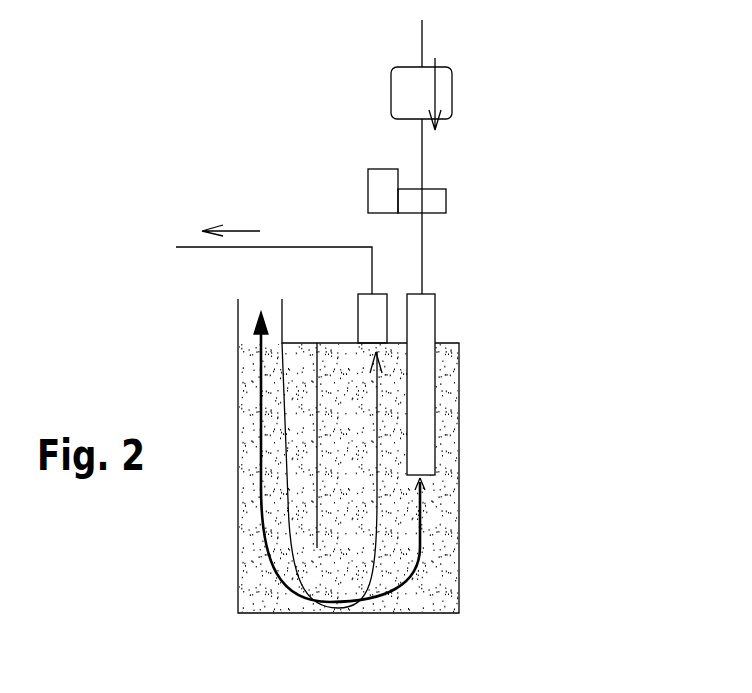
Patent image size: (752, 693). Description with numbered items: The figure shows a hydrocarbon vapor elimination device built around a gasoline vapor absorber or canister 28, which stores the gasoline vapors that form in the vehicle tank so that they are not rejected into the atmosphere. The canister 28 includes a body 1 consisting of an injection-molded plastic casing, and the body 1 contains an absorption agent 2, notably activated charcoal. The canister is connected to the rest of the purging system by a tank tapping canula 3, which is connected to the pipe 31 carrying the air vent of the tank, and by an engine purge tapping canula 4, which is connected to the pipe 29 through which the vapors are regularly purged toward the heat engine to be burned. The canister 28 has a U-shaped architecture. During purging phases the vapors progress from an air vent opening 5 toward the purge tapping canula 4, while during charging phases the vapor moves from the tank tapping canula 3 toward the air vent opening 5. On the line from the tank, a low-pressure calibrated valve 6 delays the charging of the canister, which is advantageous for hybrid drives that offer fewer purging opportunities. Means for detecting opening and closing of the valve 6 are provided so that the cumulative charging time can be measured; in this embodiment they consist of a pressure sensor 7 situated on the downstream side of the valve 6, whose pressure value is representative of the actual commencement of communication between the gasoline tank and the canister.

The body 1 is at (453, 587).
The absorption agent 2 is at (453, 528).
The tank tapping canula 3 is at (437, 310).
The engine purge tapping canula 4 is at (358, 323).
The air vent opening 5 is at (262, 307).
The low-pressure calibrated valve 6 is at (447, 90).
The pressure sensor 7 is at (380, 188).
The canister 28 is at (512, 355).
The pipe 29 is at (297, 247).
The pipe 31 is at (422, 45).